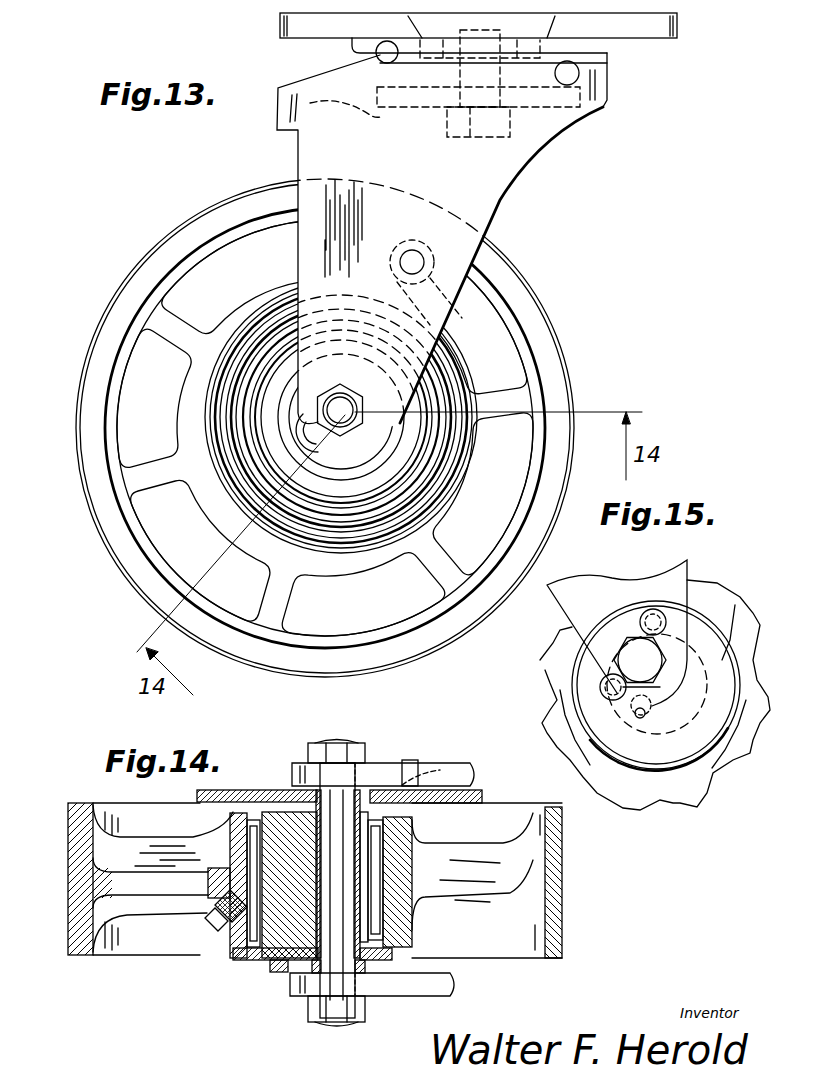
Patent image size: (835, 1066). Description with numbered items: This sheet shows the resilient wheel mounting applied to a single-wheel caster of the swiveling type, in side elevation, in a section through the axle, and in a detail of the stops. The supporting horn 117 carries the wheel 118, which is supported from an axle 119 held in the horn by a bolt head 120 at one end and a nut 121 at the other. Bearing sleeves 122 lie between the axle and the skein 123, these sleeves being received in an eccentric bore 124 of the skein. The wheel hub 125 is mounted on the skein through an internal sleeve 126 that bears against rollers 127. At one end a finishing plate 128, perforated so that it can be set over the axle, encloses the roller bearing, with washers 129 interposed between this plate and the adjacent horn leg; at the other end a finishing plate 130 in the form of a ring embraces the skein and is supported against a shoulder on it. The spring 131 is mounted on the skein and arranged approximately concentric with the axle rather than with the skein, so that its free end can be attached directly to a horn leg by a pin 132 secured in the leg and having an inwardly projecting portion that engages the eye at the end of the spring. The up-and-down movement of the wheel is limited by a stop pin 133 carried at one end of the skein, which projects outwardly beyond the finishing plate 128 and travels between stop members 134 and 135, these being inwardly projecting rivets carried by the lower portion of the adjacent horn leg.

In FIG. 13, the supporting horn 117 is at (505, 176).
In FIG. 15, the supporting horn 117 is at (590, 590).
In FIG. 14, the supporting horn 117 is at (476, 773).
In FIG. 13, the wheel 118 is at (196, 222).
In FIG. 15, the wheel 118 is at (742, 612).
In FIG. 14, the wheel 118 is at (75, 835).
In FIG. 13, the axle 119 is at (352, 401).
In FIG. 14, the axle 119 is at (337, 745).
In FIG. 15, the bolt head 120 is at (634, 646).
In FIG. 14, the bolt head 120 is at (340, 1024).
In FIG. 13, the nut 121 is at (362, 406).
In FIG. 14, the nut 121 is at (368, 756).
In FIG. 14, the bearing sleeves 122 is at (372, 930).
In FIG. 13, the skein 123 is at (288, 398).
In FIG. 14, the skein 123 is at (295, 860).
In FIG. 14, the eccentric bore 124 is at (318, 870).
In FIG. 14, the wheel hub 125 is at (235, 830).
In FIG. 14, the internal sleeve 126 is at (220, 945).
In FIG. 14, the rollers 127 is at (258, 925).
In FIG. 15, the finishing plate 128 is at (685, 760).
In FIG. 14, the finishing plate 128 is at (245, 965).
In FIG. 14, the washers 129 is at (315, 972).
In FIG. 14, the finishing plate 130 is at (253, 793).
In FIG. 13, the spring 131 is at (453, 480).
In FIG. 14, the spring 131 is at (200, 795).
In FIG. 13, the pin 132 is at (412, 250).
In FIG. 14, the pin 132 is at (420, 776).
In FIG. 15, the stop pin 133 is at (640, 718).
In FIG. 14, the stop pin 133 is at (280, 972).
In FIG. 15, the stop member 134 is at (660, 616).
In FIG. 15, the stop member 135 is at (600, 688).